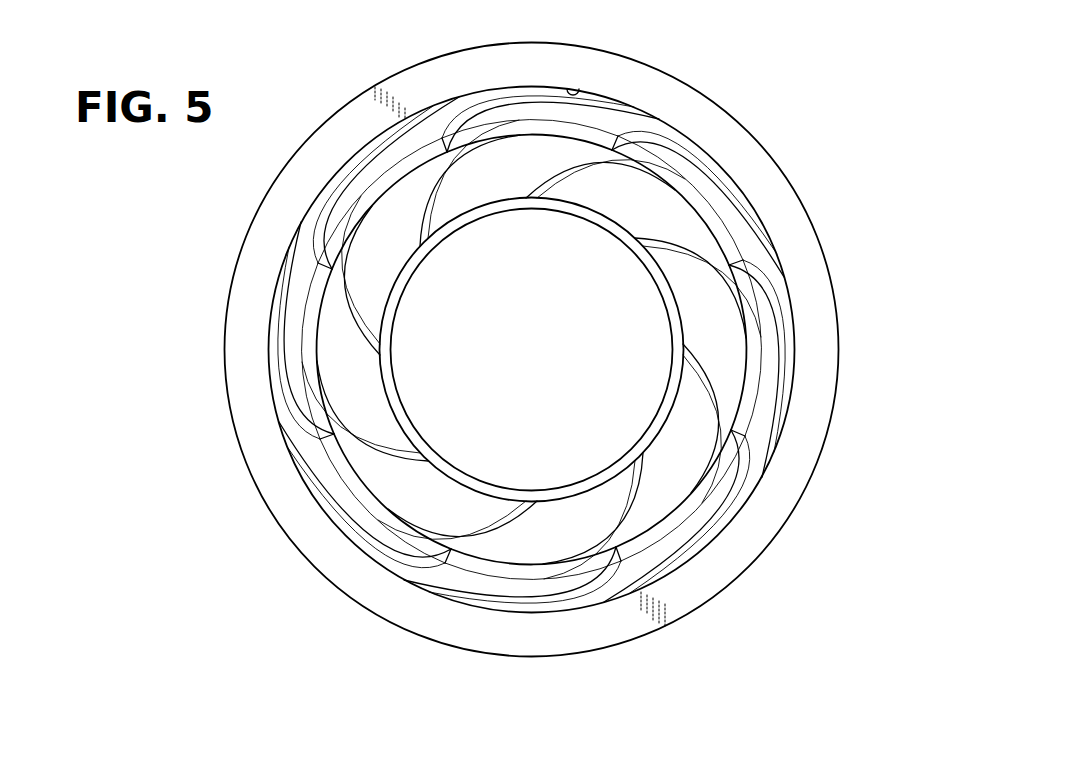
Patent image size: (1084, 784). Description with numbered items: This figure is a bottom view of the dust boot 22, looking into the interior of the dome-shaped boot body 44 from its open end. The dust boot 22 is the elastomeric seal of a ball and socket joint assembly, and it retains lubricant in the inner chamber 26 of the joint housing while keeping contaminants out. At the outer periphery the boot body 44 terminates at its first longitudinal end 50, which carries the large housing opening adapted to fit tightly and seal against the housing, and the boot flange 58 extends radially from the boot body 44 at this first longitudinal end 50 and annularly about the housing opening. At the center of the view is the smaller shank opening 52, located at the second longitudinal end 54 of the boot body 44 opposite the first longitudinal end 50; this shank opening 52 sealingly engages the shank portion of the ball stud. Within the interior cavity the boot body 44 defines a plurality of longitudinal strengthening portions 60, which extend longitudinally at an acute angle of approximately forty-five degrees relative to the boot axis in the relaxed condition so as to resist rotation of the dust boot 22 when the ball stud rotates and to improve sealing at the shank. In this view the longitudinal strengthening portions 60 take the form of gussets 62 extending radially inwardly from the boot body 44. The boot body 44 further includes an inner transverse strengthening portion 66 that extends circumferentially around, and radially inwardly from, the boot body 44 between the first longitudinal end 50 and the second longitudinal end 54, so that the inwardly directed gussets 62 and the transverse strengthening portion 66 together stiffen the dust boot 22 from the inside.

The dust boot 22 is at (837, 253).
The inner chamber 26 is at (578, 97).
The boot body 44 is at (387, 150).
The first longitudinal end 50 is at (793, 411).
The shank opening 52 is at (400, 418).
The second longitudinal end 54 is at (733, 281).
The boot flange 58 is at (794, 464).
The longitudinal strengthening portions 60 is at (651, 126).
The gussets 62 is at (727, 188).
The inner transverse strengthening portion 66 is at (487, 567).